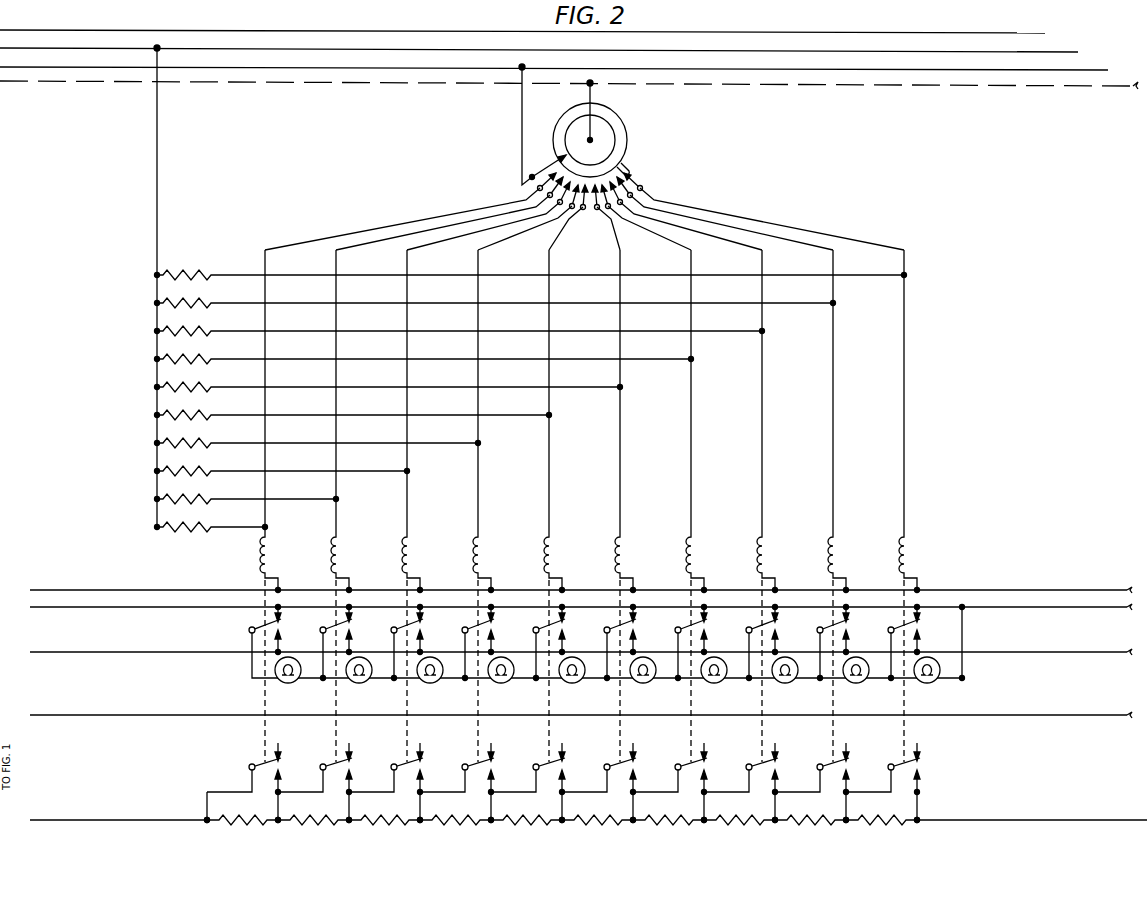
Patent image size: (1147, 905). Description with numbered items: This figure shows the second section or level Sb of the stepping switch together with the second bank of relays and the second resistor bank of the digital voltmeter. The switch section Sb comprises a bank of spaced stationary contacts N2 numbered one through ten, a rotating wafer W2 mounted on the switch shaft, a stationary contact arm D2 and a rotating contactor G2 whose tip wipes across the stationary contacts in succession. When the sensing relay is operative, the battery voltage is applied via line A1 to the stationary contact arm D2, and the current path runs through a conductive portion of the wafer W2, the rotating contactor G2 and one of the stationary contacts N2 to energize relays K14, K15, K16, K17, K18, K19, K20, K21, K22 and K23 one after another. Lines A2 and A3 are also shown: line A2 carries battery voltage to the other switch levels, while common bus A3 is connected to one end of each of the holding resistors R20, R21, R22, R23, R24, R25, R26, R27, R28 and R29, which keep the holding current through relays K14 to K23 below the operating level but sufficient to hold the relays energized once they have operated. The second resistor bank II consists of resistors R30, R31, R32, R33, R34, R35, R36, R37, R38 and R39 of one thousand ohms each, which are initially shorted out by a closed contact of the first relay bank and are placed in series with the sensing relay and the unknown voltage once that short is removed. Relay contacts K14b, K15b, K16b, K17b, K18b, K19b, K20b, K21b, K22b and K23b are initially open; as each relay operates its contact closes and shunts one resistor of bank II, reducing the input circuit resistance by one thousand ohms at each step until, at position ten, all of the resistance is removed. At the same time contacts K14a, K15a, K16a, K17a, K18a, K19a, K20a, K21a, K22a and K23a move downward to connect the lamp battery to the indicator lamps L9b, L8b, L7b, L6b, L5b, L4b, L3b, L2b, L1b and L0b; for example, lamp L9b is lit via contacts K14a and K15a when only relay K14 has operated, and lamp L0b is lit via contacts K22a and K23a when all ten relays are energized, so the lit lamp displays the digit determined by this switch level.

The lead A1 is at (1108, 70).
The line A2 is at (1045, 33).
The common bus A3 is at (1078, 52).
The switch section Sb is at (635, 128).
The rotating contactor G2 is at (564, 116).
The selector switch shaft W2 is at (616, 128).
The stationary contact arm D2 is at (556, 160).
The selector detent N2 is at (634, 173).
The resistor R20 is at (203, 274).
The resistor R21 is at (203, 302).
The resistor R22 is at (203, 330).
The resistor R23 is at (203, 358).
The resistor R24 is at (203, 386).
The resistor R25 is at (203, 414).
The resistor R26 is at (203, 442).
The resistor R27 is at (203, 470).
The resistor R28 is at (203, 498).
The resistor R29 is at (203, 526).
The relay K14 is at (270, 556).
The relay K15 is at (341, 556).
The relay K16 is at (412, 556).
The relay K17 is at (483, 556).
The relay K18 is at (554, 556).
The relay K19 is at (625, 556).
The relay K20 is at (696, 556).
The relay K21 is at (767, 556).
The relay K22 is at (838, 556).
The relay K23 is at (909, 556).
The relay contact K14a is at (254, 628).
The relay contact K15a is at (325, 628).
The relay contact K16a is at (396, 628).
The relay contact K17a is at (467, 628).
The relay contact K18a is at (538, 628).
The relay contact K19a is at (609, 628).
The relay contact K20a is at (680, 628).
The relay contact K21a is at (751, 628).
The relay contact K22a is at (822, 628).
The relay contact K23a is at (893, 628).
The lamp L9b is at (280, 684).
The lamp L8b is at (351, 684).
The lamp L7b is at (422, 684).
The lamp L6b is at (493, 684).
The lamp L5b is at (564, 684).
The lamp L4b is at (635, 684).
The lamp L3b is at (706, 684).
The lamp L2b is at (777, 684).
The lamp L1b is at (848, 684).
The lamp L0b is at (919, 684).
The relay contact K14b is at (255, 763).
The relay contact K15b is at (326, 763).
The relay contact K16b is at (397, 763).
The relay contact K17b is at (468, 763).
The relay contact K18b is at (539, 763).
The relay contact K19b is at (610, 763).
The relay contact K20b is at (681, 763).
The relay contact K21b is at (752, 763).
The relay contact K22b is at (823, 763).
The relay contact K23b is at (894, 763).
The resistor R30 is at (253, 826).
The resistor R31 is at (324, 826).
The resistor R32 is at (395, 826).
The resistor R33 is at (466, 826).
The resistor R34 is at (537, 826).
The resistor R35 is at (608, 826).
The resistor R36 is at (679, 826).
The resistor R37 is at (750, 826).
The resistor R38 is at (821, 826).
The resistor R39 is at (892, 826).
The second resistor bank II is at (853, 849).